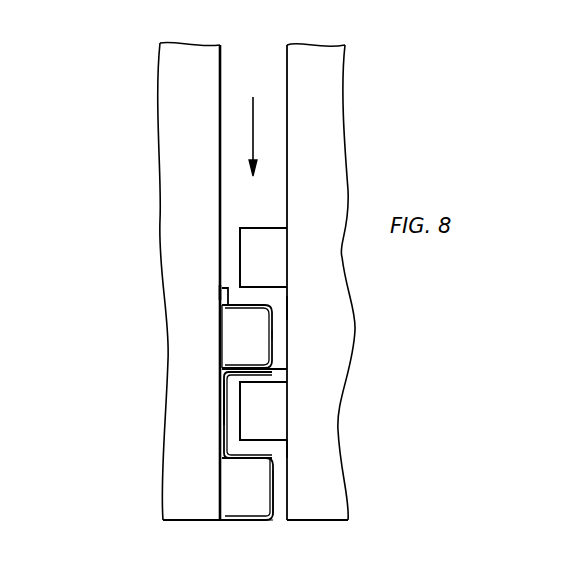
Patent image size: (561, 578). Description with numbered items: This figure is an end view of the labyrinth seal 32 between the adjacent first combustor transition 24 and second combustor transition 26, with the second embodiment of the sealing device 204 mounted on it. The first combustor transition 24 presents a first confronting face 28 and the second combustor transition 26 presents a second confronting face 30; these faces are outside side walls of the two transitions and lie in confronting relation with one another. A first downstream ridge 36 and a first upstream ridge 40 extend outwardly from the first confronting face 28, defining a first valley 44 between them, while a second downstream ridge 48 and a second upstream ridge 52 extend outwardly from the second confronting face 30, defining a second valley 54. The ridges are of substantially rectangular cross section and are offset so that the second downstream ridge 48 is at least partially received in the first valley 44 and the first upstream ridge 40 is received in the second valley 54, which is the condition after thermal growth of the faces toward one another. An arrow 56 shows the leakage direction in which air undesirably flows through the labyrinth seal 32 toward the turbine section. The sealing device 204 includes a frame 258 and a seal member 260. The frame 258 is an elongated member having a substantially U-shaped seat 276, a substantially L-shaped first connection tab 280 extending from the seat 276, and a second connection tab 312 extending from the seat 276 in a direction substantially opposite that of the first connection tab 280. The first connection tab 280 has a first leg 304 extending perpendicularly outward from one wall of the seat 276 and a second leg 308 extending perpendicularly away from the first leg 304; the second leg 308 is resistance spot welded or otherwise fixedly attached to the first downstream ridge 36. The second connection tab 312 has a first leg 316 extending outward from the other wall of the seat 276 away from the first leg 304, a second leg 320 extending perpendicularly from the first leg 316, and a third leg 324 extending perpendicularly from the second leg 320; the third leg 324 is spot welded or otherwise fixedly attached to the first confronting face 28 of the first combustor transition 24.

The first combustor transition 24 is at (150, 73).
The second combustor transition 26 is at (343, 95).
The first confronting face 28 is at (225, 97).
The second confronting face 30 is at (286, 108).
The labyrinth seal 32 is at (268, 375).
The first downstream ridge 36 is at (238, 511).
The first upstream ridge 40 is at (228, 330).
The first valley 44 is at (224, 433).
The second downstream ridge 48 is at (277, 402).
The second upstream ridge 52 is at (283, 233).
The second valley 54 is at (290, 315).
The arrow 56 is at (253, 97).
The sealing device 204 is at (220, 415).
The frame 258 is at (247, 462).
The seal member 260 is at (288, 460).
The seat 276 is at (222, 398).
The first connection tab 280 is at (280, 482).
The first leg 304 is at (274, 502).
The second leg 308 is at (250, 523).
The second connection tab 312 is at (277, 335).
The first leg 316 is at (273, 292).
The second leg 320 is at (234, 300).
The third leg 324 is at (218, 292).